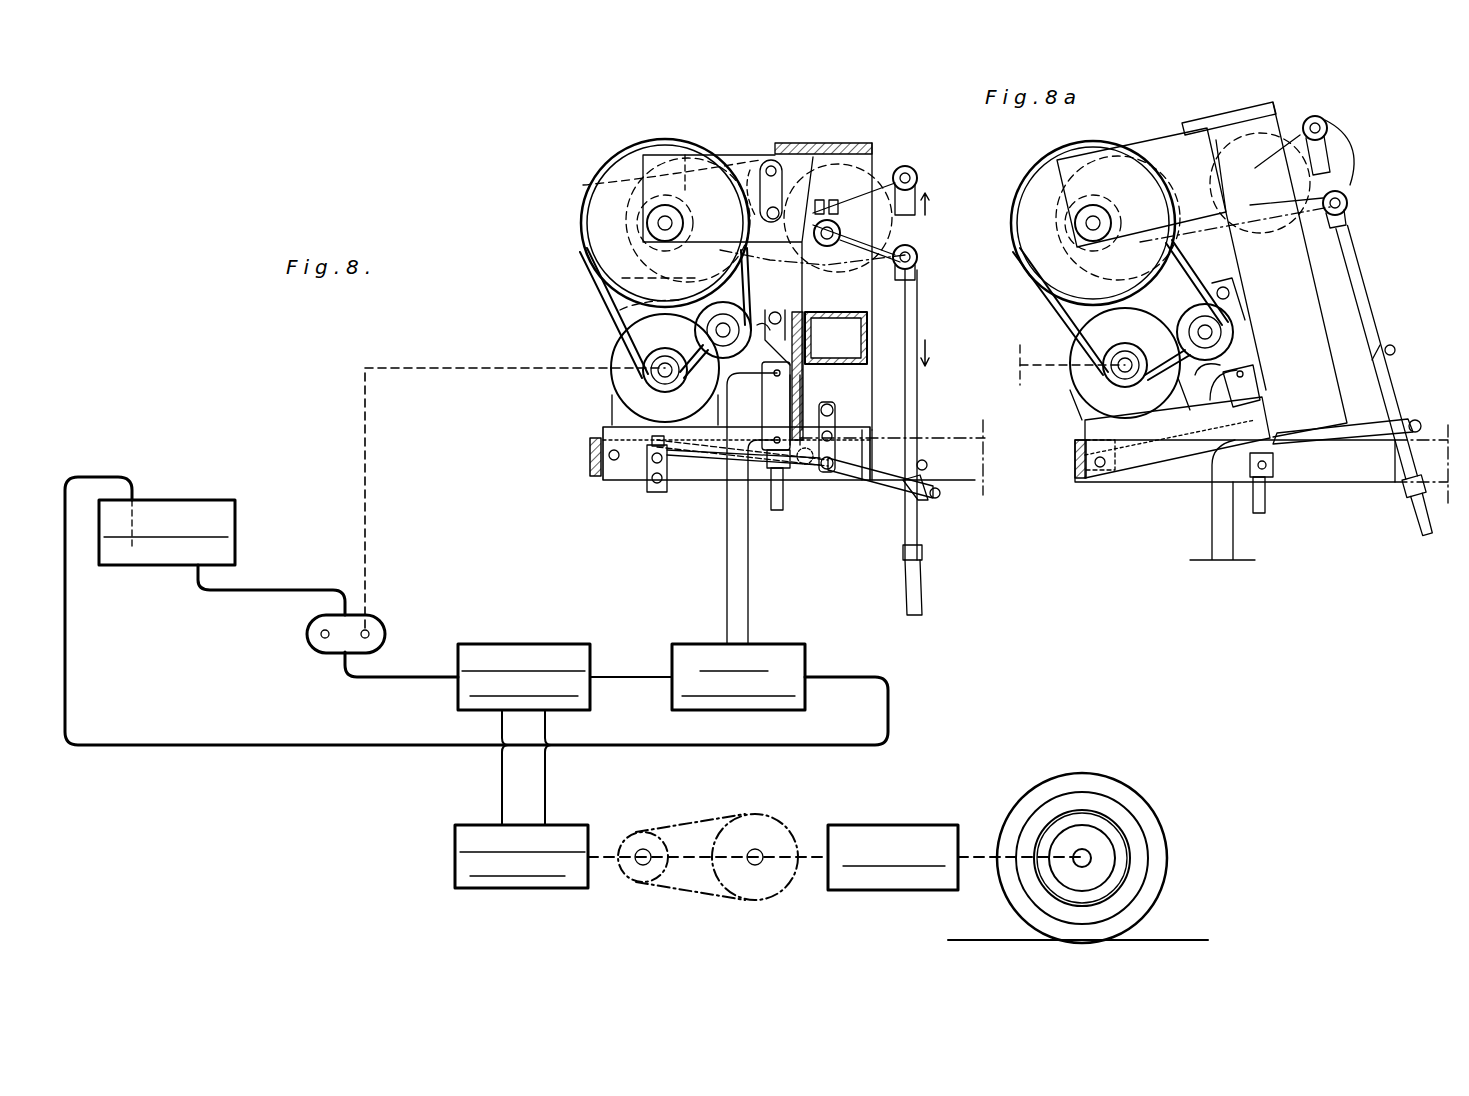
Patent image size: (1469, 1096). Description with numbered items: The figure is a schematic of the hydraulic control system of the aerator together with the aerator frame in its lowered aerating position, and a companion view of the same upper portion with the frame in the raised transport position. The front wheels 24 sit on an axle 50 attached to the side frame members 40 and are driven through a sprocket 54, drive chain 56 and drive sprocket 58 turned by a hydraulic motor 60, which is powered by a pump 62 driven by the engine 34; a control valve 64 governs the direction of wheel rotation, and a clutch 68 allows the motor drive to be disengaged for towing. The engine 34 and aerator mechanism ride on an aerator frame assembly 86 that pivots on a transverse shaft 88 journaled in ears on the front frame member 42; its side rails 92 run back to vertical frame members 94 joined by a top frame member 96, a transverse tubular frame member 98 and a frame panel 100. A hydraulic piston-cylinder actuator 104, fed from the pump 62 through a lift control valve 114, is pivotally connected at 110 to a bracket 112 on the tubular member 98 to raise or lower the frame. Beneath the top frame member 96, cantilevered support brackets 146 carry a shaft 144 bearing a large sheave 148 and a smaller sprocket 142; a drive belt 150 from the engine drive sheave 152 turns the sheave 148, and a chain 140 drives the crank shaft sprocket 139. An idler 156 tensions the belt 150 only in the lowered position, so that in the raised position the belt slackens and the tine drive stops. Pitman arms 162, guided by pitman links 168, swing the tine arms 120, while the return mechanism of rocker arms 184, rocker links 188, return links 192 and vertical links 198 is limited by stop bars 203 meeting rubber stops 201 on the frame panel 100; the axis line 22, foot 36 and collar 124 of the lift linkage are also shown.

In FIG. 8, the rotary axis line 22 is at (952, 438).
In FIG. 8, the front wheels 24 is at (1142, 812).
In FIG. 8, the engine 34 is at (612, 380).
In FIG. 8A, the engine 34 is at (1085, 385).
In FIG. 8, the foot of lift rod 36 is at (922, 598).
In FIG. 8A, the foot of lift rod 36 is at (1425, 545).
In FIG. 8, the side frame members 40 is at (975, 480).
In FIG. 8A, the side frame members 40 is at (1350, 482).
In FIG. 8, the front frame member 42 is at (590, 452).
In FIG. 8A, the front frame member 42 is at (1075, 460).
In FIG. 8, the axle 50 is at (1085, 868).
In FIG. 8, the sprocket 54 is at (765, 900).
In FIG. 8, the drive chain 56 is at (708, 893).
In FIG. 8, the drive sprocket 58 is at (622, 880).
In FIG. 8, the hydraulic motor 60 is at (505, 888).
In FIG. 8, the pump 62 is at (370, 632).
In FIG. 8, the control valve 64 is at (535, 644).
In FIG. 8, the clutch 68 is at (885, 825).
In FIG. 8, the aerator frame assembly 86 is at (643, 480).
In FIG. 8A, the aerator frame assembly 86 is at (1188, 470).
In FIG. 8, the transverse shaft 88 is at (614, 462).
In FIG. 8A, the transverse shaft 88 is at (1100, 470).
In FIG. 8, the side rails 92 is at (700, 470).
In FIG. 8, the vertical frame members 94 is at (866, 408).
In FIG. 8A, the vertical frame members 94 is at (1305, 350).
In FIG. 8, the top frame member 96 is at (812, 143).
In FIG. 8A, the top frame member 96 is at (1220, 123).
In FIG. 8, the transverse tubular frame member 98 is at (198, 500).
In FIG. 8, the transverse frame panel 100 is at (805, 390).
In FIG. 8, the hydraulic piston-cylinder actuator 104 is at (765, 405).
In FIG. 8A, the hydraulic piston-cylinder actuator 104 is at (1262, 385).
In FIG. 8, the pivotal connection 110 is at (782, 310).
In FIG. 8, the bracket 112 is at (768, 320).
In FIG. 8, the lift control valve 114 is at (775, 644).
In FIG. 8, the tine arms 120 is at (918, 345).
In FIG. 8A, the tine arms 120 is at (1368, 293).
In FIG. 8, the collar 124 is at (923, 552).
In FIG. 8A, the collar 124 is at (1405, 500).
In FIG. 8, the sprocket 139 is at (868, 135).
In FIG. 8, the chain 140 is at (680, 145).
In FIG. 8, the sprocket 142 is at (600, 185).
In FIG. 8, the shaft 144 is at (660, 223).
In FIG. 8, the cantilevered support brackets 146 is at (722, 160).
In FIG. 8A, the cantilevered support brackets 146 is at (1145, 158).
In FIG. 8, the large sheave 148 is at (600, 208).
In FIG. 8A, the large sheave 148 is at (1030, 188).
In FIG. 8, the drive belt 150 is at (600, 295).
In FIG. 8A, the drive belt 150 is at (1055, 310).
In FIG. 8A, the drive sheave 152 is at (1112, 352).
In FIG. 8, the idler 156 is at (710, 332).
In FIG. 8A, the idler 156 is at (1238, 372).
In FIG. 8, the pitman arms 162 is at (930, 165).
In FIG. 8A, the pitman arms 162 is at (1348, 195).
In FIG. 8, the pitman links 168 is at (762, 150).
In FIG. 8, the rocker arms 184 is at (655, 492).
In FIG. 8, the rocker links 188 is at (718, 455).
In FIG. 8, the return links 192 is at (905, 490).
In FIG. 8A, the return links 192 is at (1370, 410).
In FIG. 8, the vertical links 198 is at (815, 475).
In FIG. 8, the rubber stops 201 is at (735, 428).
In FIG. 8, the stop bars 203 is at (835, 435).